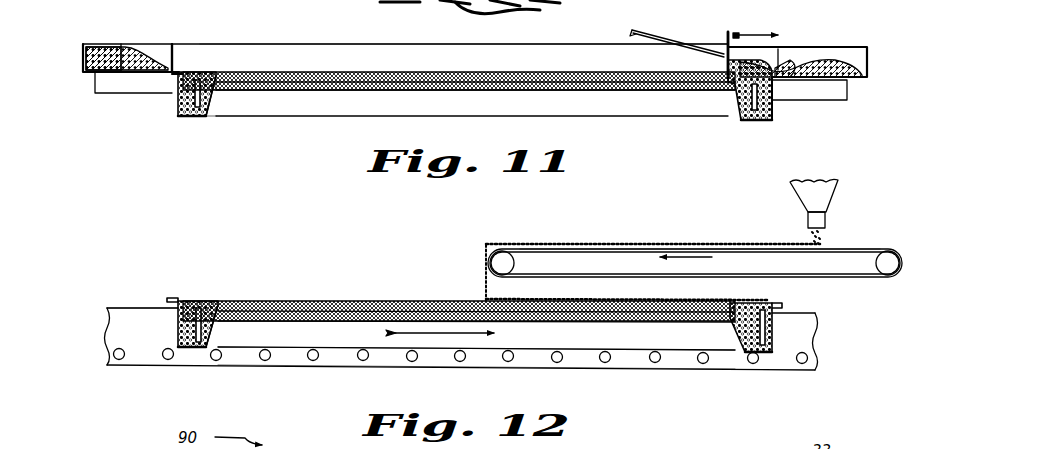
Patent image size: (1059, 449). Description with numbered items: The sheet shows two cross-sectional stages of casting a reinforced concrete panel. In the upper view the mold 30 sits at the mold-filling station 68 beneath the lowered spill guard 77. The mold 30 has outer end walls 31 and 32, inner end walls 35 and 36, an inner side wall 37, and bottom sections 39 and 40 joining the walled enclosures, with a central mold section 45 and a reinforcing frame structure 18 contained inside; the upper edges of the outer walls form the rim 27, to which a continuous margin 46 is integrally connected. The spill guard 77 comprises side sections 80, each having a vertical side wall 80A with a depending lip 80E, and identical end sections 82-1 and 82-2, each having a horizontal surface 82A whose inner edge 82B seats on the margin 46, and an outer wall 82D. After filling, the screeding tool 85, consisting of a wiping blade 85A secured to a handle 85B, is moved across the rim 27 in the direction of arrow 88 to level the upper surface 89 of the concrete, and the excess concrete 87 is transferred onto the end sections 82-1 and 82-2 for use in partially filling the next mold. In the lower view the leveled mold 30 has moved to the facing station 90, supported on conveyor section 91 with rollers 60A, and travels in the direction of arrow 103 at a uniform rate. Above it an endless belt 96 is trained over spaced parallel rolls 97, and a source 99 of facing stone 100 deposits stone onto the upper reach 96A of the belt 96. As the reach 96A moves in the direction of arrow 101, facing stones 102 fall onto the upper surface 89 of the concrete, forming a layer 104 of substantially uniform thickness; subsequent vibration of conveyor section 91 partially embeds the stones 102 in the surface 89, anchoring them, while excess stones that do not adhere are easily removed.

In FIG. 11, the spill guard end section 82-1 is at (84, 50).
In FIG. 11, the spill guard 77 is at (70, 62).
In FIG. 11, the mold-filling station 68 is at (78, 116).
In FIG. 11, the depending lip 80E is at (123, 86).
In FIG. 11, the excess concrete 87 is at (98, 44).
In FIG. 11, the horizontal surface 82A is at (122, 66).
In FIG. 11, the inner edge 82B is at (175, 68).
In FIG. 11, the rim 27 is at (184, 72).
In FIG. 11, the upper surface of the concrete 89 is at (296, 72).
In FIG. 12, the upper surface of the concrete 89 is at (360, 300).
In FIG. 11, the spill guard side section 80 is at (385, 50).
In FIG. 11, the vertical side wall 80A is at (500, 55).
In FIG. 11, the handle 85B is at (646, 12).
In FIG. 11, the screeding tool 85 is at (684, 36).
In FIG. 11, the wiping blade 85A is at (734, 30).
In FIG. 11, the arrow 88 is at (755, 24).
In FIG. 11, the spill guard end section 82-2 is at (868, 48).
In FIG. 11, the outer wall 82D is at (868, 70).
In FIG. 11, the margin 46 is at (780, 84).
In FIG. 12, the margin 46 is at (172, 296).
In FIG. 11, the outer end wall 32 is at (774, 108).
In FIG. 12, the outer end wall 32 is at (774, 334).
In FIG. 11, the bottom section 40 is at (758, 118).
In FIG. 12, the bottom section 40 is at (764, 354).
In FIG. 11, the inner end wall 36 is at (740, 100).
In FIG. 12, the inner end wall 36 is at (736, 340).
In FIG. 11, the inner side wall 37 is at (472, 104).
In FIG. 12, the inner side wall 37 is at (476, 338).
In FIG. 11, the central mold section 45 is at (385, 90).
In FIG. 12, the central mold section 45 is at (324, 326).
In FIG. 11, the inner end wall 35 is at (218, 96).
In FIG. 12, the inner end wall 35 is at (218, 330).
In FIG. 11, the mold 30 is at (228, 122).
In FIG. 12, the mold 30 is at (692, 348).
In FIG. 11, the bottom section 39 is at (197, 109).
In FIG. 12, the bottom section 39 is at (196, 350).
In FIG. 11, the outer end wall 31 is at (176, 104).
In FIG. 12, the outer end wall 31 is at (176, 338).
In FIG. 12, the facing station 90 is at (138, 262).
In FIG. 12, the reinforcing frame structure 18 is at (176, 326).
In FIG. 12, the rollers 60A is at (116, 360).
In FIG. 12, the conveyor section 91 is at (324, 372).
In FIG. 12, the arrow 103 is at (440, 338).
In FIG. 12, the endless belt 96 is at (864, 288).
In FIG. 12, the rolls 97 is at (514, 263).
In FIG. 12, the arrow 101 is at (686, 267).
In FIG. 12, the upper reach of the belt 96A is at (836, 246).
In FIG. 12, the facing stones 102 is at (484, 280).
In FIG. 12, the layer of facing stones 104 is at (640, 300).
In FIG. 12, the source of facing stone 99 is at (828, 190).
In FIG. 12, the facing stone 100 is at (806, 232).